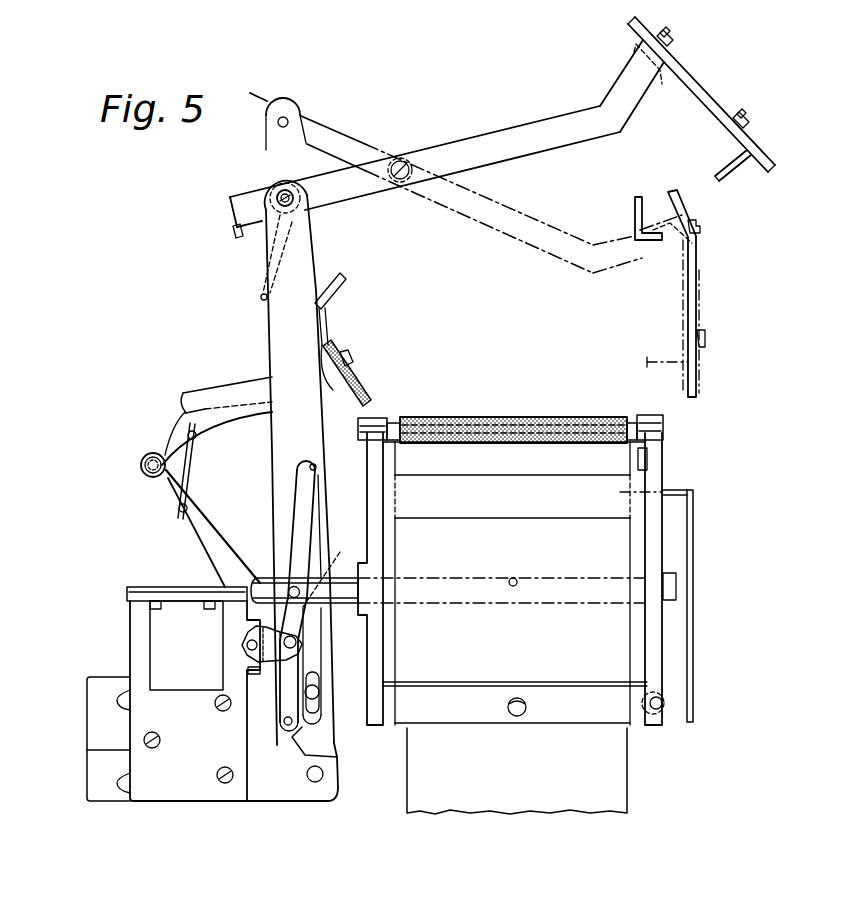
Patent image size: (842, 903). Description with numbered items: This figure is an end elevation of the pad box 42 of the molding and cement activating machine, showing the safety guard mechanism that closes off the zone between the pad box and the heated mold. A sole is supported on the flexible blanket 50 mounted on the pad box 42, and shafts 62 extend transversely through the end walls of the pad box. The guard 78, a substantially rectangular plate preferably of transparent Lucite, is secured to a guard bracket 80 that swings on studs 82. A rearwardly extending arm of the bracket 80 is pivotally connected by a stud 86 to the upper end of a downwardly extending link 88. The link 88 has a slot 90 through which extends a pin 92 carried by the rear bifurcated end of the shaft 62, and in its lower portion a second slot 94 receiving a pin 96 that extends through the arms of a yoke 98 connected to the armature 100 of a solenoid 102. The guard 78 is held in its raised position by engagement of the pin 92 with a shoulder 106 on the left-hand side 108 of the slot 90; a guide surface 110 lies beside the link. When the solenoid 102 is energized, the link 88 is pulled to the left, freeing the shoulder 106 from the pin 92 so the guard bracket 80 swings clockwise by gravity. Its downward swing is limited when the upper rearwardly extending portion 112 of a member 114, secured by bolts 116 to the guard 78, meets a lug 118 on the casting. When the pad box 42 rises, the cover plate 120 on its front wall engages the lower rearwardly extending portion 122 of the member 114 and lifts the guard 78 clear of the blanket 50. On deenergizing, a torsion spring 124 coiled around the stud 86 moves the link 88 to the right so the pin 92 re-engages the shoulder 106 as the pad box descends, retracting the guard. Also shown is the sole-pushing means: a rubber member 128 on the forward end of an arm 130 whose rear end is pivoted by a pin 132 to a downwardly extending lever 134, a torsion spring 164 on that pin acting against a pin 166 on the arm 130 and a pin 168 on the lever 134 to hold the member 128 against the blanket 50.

The pad box 42 is at (620, 548).
The flexible blanket 50 is at (475, 417).
The shaft 62 is at (359, 608).
The guard 78 is at (714, 96).
The guard bracket 80 is at (502, 132).
The stud 82 is at (401, 160).
The stud 86 is at (278, 191).
The link 88 is at (271, 328).
The slot 90 is at (315, 467).
The pin 92 is at (290, 587).
The second slot 94 is at (289, 726).
The pin 96 is at (296, 624).
The yoke 98 is at (270, 660).
The armature 100 is at (241, 712).
The solenoid 102 is at (179, 690).
The shoulder 106 is at (337, 568).
The left-hand side of slot 108 is at (295, 504).
The slot 110 is at (318, 497).
The upper rearwardly extending portion 112 is at (660, 84).
The member 114 is at (727, 132).
The bolt 116 is at (666, 33).
The lug 118 is at (641, 242).
The cover plate 120 is at (694, 519).
The lower rearwardly extending portion 122 is at (726, 166).
The torsion spring 124 is at (236, 236).
The rubber member 128 is at (365, 391).
The arm 130 is at (245, 421).
The pin 132 is at (150, 455).
The lever 134 is at (195, 553).
The torsion spring 164 is at (176, 499).
The pin 166 is at (194, 440).
The pin 168 is at (188, 507).